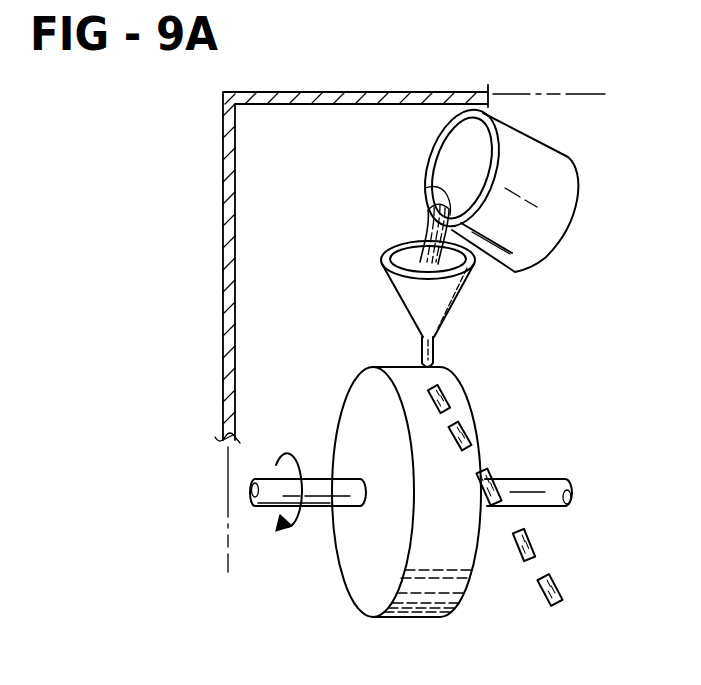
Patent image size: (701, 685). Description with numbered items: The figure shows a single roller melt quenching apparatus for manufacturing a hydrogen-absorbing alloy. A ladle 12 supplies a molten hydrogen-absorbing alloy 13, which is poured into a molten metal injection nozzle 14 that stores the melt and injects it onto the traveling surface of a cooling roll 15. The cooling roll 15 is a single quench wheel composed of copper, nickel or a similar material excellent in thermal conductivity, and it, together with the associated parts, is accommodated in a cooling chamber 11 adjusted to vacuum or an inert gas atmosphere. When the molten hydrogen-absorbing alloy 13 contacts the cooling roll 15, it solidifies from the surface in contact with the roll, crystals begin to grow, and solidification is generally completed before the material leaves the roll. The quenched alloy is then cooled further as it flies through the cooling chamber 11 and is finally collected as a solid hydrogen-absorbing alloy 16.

The cooling chamber 11 is at (222, 268).
The ladle 12 is at (569, 156).
The molten hydrogen-absorbing alloy 13 is at (440, 192).
The molten metal injection nozzle 14 is at (438, 345).
The cooling roll 15 is at (463, 405).
The solid hydrogen-absorbing alloy 16 is at (536, 538).